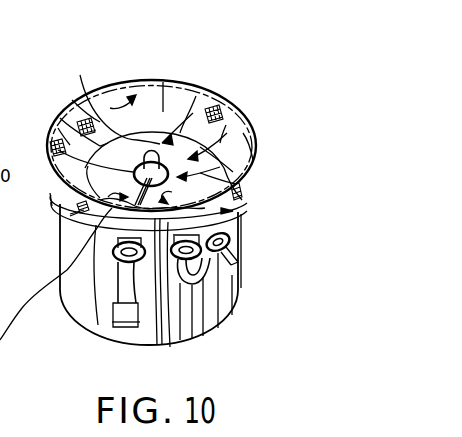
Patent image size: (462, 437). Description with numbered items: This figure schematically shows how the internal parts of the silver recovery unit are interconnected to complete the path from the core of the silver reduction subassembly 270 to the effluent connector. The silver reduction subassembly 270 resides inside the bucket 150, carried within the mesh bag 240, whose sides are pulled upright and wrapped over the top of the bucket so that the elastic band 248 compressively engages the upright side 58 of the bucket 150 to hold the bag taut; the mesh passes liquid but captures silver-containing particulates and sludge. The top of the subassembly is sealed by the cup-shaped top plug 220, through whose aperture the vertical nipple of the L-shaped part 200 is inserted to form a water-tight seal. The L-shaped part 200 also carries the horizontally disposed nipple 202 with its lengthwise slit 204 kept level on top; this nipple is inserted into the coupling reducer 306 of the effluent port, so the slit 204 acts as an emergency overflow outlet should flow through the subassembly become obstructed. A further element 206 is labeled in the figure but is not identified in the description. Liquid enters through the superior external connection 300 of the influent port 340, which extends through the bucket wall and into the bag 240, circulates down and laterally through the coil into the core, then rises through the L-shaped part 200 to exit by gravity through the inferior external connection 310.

The bucket 150 is at (248, 271).
The L-shaped part 200 is at (207, 84).
The horizontally disposed nipple 202 is at (63, 130).
The lengthwise slit 204 is at (80, 75).
The bowl wall 206 is at (10, 137).
The top plug 220 is at (243, 133).
The mesh bag 240 is at (110, 108).
The elastic band 248 is at (70, 216).
The silver reduction subassembly 270 is at (226, 125).
The superior external connection 300 is at (237, 256).
The coupling reducer 306 is at (156, 346).
The inferior external connection 310 is at (122, 316).
The influent port 340 is at (172, 347).
The upright sides 58 is at (70, 214).